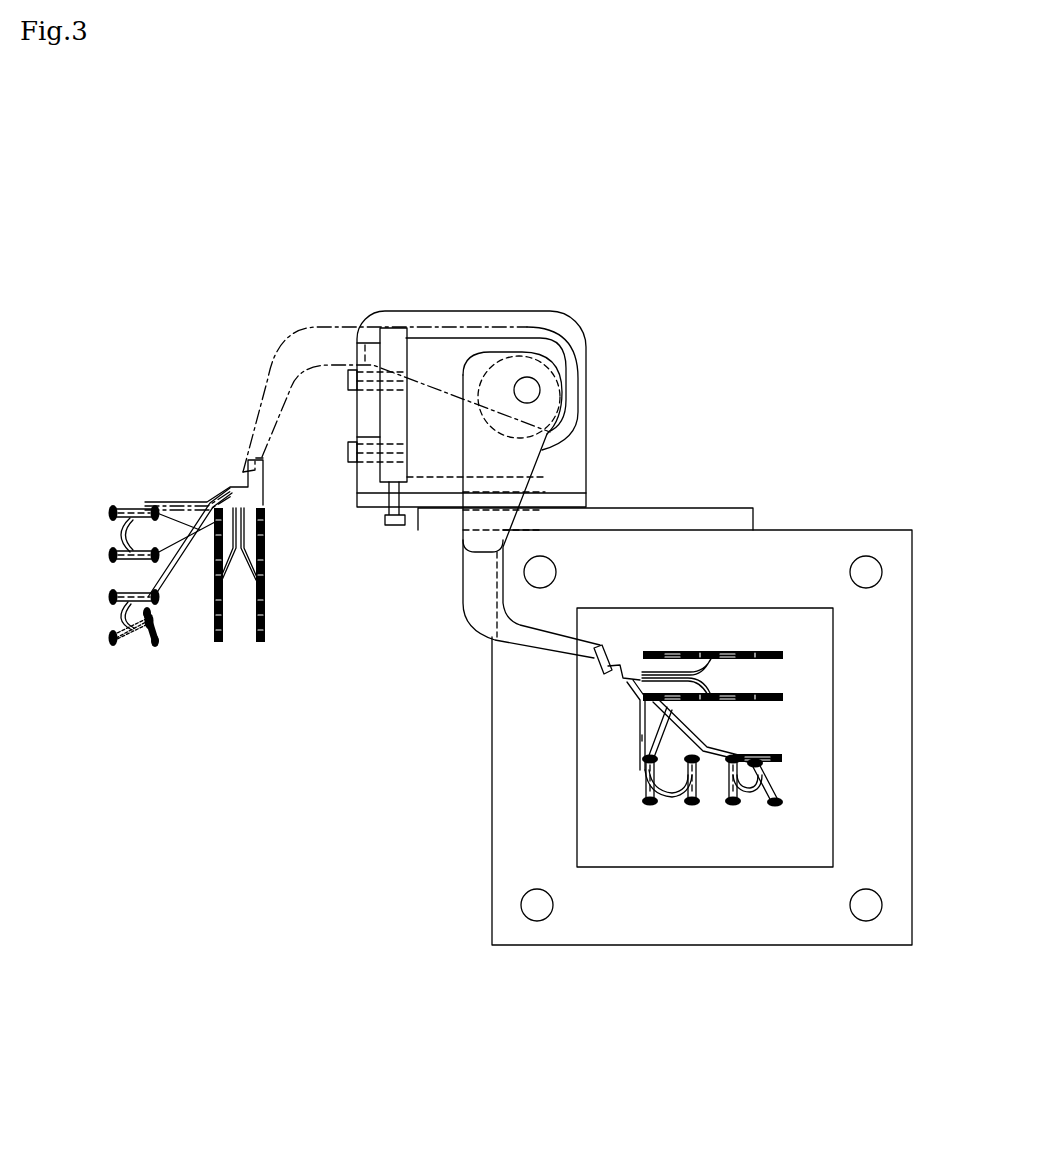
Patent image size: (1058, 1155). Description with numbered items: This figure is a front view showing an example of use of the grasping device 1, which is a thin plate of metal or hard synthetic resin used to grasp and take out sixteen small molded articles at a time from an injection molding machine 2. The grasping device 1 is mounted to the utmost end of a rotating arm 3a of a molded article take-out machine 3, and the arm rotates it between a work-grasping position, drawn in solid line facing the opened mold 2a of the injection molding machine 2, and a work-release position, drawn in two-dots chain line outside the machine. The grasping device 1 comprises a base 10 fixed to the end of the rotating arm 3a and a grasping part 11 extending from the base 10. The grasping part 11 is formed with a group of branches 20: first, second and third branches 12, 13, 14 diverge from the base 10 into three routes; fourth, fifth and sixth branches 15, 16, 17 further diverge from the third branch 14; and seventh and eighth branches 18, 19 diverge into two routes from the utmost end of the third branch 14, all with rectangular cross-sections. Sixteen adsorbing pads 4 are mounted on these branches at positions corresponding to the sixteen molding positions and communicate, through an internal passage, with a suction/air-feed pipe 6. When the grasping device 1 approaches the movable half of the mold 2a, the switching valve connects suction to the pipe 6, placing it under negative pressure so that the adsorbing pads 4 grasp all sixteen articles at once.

The grasping device 1 is at (467, 648).
The injection molding machine 2 is at (803, 523).
The mold 2a is at (826, 730).
The molded article take-out machine 3 is at (566, 306).
The rotating arm 3a is at (320, 327).
The adsorbing pads 4 is at (120, 512).
The suction/air-feed pipe 6 is at (713, 678).
The base 10 is at (273, 492).
The grasping part 11 is at (270, 553).
The first branch 12 is at (253, 623).
The second branch 13 is at (213, 630).
The third branch 14 is at (200, 545).
The fourth branch 15 is at (127, 498).
The fifth branch 16 is at (123, 568).
The sixth branch 17 is at (123, 610).
The seventh branch 18 is at (155, 640).
The eighth branch 19 is at (130, 638).
The group of branches 20 is at (225, 608).